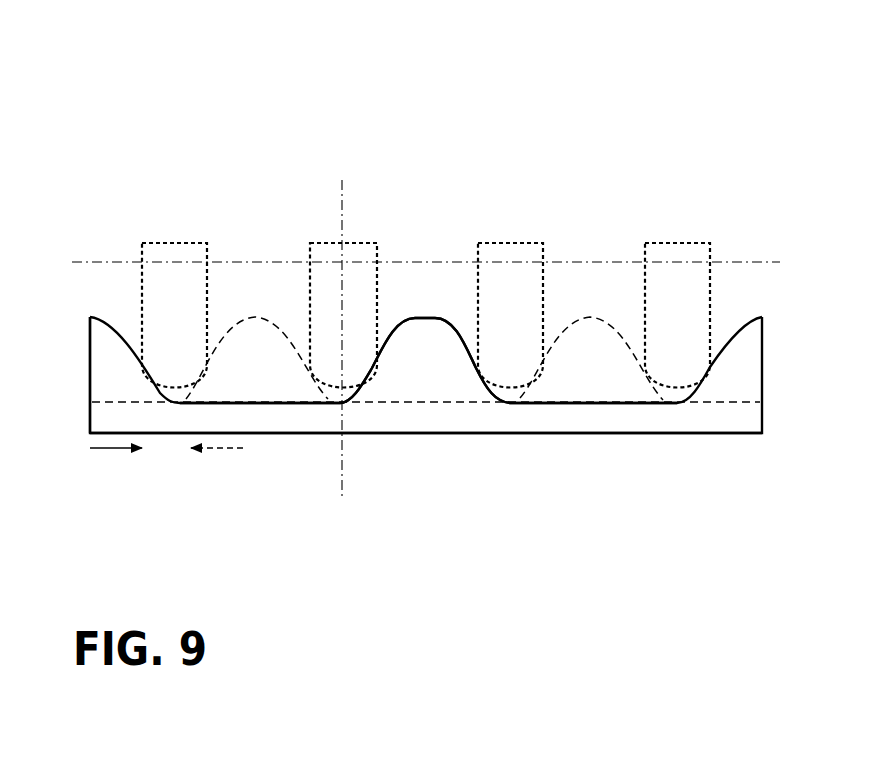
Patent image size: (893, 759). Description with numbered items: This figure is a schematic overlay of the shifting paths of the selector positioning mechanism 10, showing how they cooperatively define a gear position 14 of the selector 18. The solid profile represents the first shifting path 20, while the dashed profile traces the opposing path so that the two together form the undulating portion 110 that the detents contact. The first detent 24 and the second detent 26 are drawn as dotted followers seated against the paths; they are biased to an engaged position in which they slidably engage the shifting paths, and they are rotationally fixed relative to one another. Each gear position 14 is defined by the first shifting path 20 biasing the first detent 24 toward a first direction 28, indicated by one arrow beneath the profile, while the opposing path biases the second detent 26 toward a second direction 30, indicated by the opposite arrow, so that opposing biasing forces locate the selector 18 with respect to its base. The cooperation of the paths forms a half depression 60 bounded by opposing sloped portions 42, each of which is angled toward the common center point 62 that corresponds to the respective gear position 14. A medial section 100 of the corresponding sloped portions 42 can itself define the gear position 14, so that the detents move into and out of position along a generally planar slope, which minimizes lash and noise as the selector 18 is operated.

The selector positioning mechanism 10 is at (461, 82).
The gear position 14 is at (170, 240).
The selector 18 is at (255, 316).
The first shifting path 20 is at (580, 415).
The first detent 24 is at (141, 252).
The second detent 26 is at (141, 313).
The first direction 28 is at (222, 450).
The second direction 30 is at (112, 449).
The sloped portion 42 is at (369, 360).
The half depression 60 is at (510, 353).
The common center point 62 is at (342, 402).
The medial section 100 is at (728, 333).
The undulating portion 110 is at (226, 200).